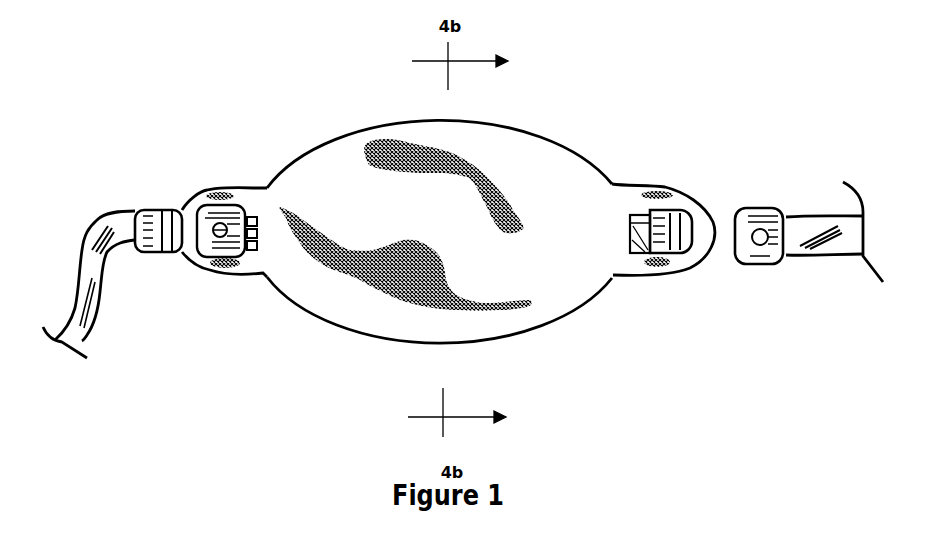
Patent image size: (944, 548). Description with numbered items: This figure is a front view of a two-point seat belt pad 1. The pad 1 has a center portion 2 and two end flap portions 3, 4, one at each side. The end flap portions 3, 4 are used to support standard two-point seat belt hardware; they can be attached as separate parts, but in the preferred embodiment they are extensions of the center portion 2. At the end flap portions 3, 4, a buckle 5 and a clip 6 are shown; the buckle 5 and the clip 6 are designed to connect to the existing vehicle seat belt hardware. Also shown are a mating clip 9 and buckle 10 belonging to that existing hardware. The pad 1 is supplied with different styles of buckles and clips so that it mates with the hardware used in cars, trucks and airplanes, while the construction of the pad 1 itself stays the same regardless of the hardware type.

The two-point seat belt pad 1 is at (285, 130).
The center portion 2 is at (357, 130).
The end flap portion 3 is at (217, 187).
The end flap portion 4 is at (658, 185).
The buckle 5 is at (201, 257).
The clip 6 is at (692, 250).
The clip 9 is at (147, 206).
The buckle 10 is at (763, 208).